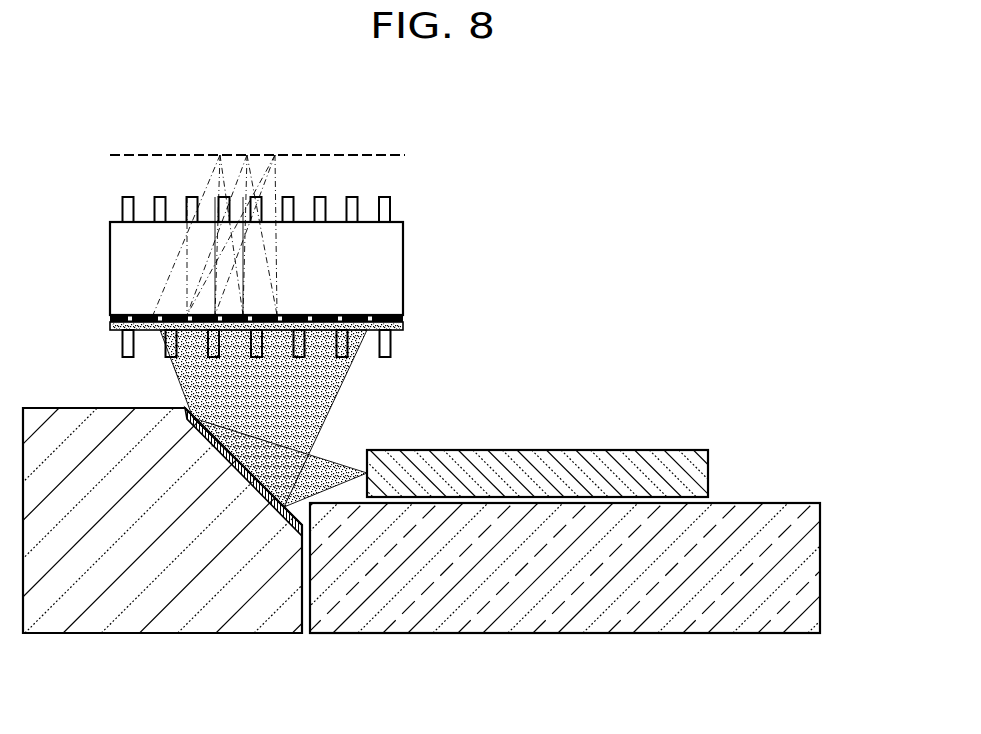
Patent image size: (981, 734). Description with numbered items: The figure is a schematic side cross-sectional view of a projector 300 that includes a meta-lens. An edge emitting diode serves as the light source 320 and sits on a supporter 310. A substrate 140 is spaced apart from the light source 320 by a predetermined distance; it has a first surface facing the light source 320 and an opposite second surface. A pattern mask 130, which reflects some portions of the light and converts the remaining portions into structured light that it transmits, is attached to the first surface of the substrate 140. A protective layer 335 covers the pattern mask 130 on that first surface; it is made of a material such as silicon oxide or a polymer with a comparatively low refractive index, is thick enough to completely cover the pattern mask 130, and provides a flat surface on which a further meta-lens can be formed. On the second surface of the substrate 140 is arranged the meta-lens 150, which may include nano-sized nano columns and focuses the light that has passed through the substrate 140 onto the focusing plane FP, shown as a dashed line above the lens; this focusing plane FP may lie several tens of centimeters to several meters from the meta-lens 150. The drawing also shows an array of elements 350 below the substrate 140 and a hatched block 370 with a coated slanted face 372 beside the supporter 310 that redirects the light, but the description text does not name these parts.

The projector 300 is at (530, 163).
The meta-lens 150 is at (399, 208).
The substrate 140 is at (390, 269).
The pattern mask 130 is at (404, 322).
The protective layer 335 is at (110, 327).
The lower electrode array 350 is at (397, 345).
The reflector block 370 is at (125, 625).
The reflective coating 372 is at (244, 467).
The light source 320 is at (656, 460).
The supporter 310 is at (593, 625).
The focusing plane FP is at (127, 157).